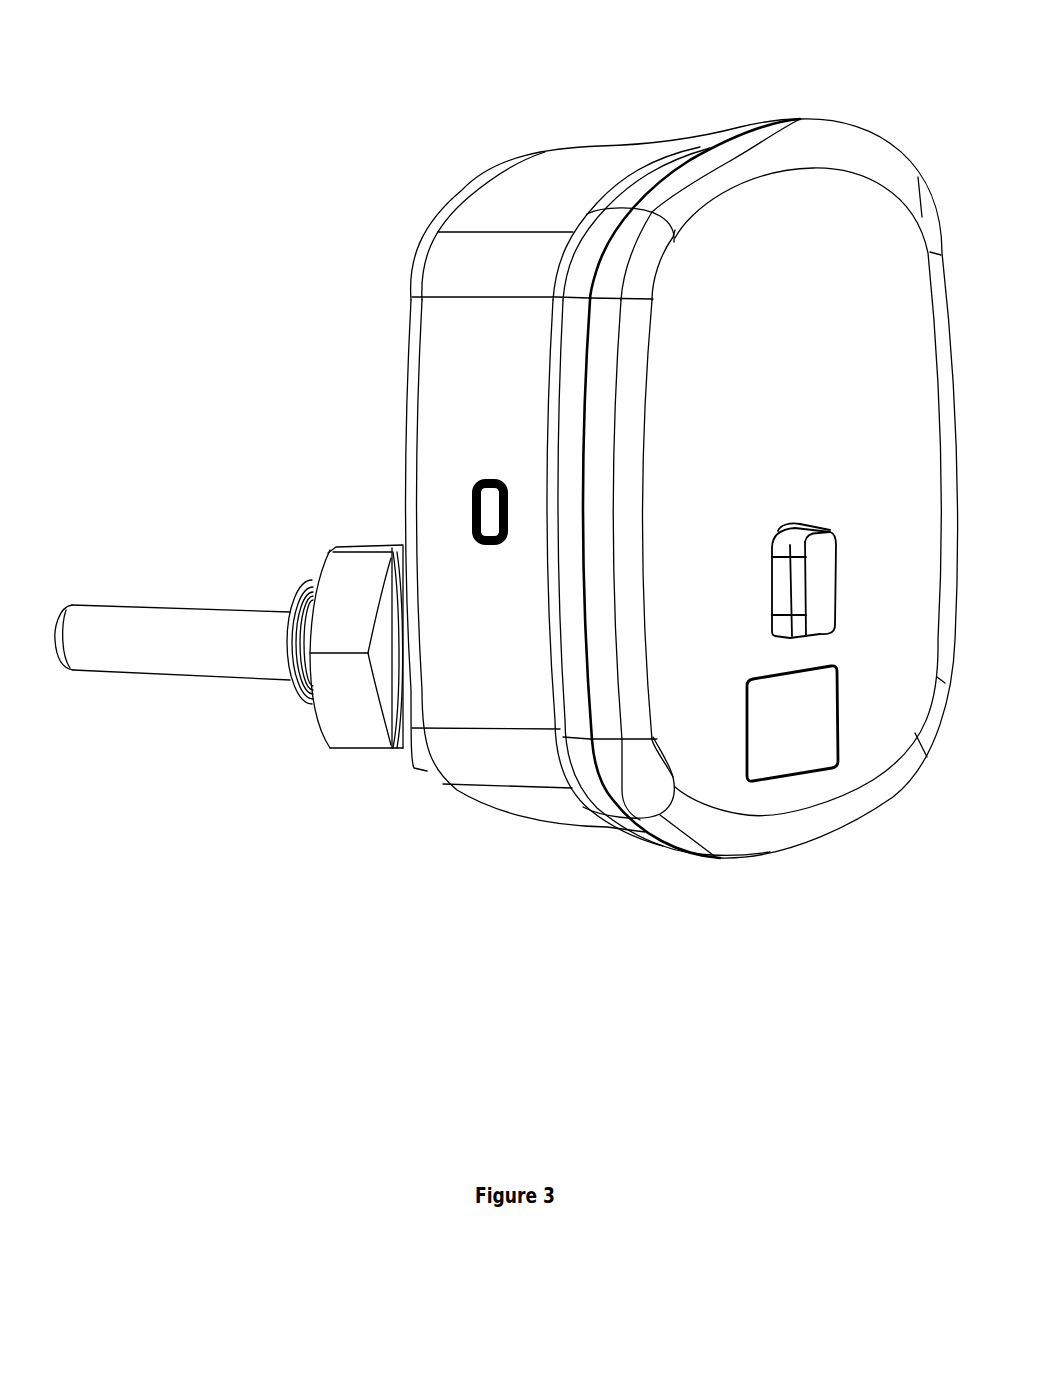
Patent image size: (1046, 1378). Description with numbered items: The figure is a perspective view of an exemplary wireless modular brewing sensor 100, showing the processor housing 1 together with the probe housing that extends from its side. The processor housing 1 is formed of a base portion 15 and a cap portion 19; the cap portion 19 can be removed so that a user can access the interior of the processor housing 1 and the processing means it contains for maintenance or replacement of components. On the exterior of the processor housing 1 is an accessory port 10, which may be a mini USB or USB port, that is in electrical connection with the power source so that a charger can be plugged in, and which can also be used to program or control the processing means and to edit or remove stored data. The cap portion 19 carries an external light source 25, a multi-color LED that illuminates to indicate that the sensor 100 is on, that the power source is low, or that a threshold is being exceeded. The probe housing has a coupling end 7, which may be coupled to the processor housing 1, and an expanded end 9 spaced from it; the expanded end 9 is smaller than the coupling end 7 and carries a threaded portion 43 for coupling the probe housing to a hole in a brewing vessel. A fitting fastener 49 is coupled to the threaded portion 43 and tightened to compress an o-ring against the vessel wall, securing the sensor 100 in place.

The wireless modular brewing sensor 100 is at (387, 100).
The processor housing 1 is at (538, 697).
The coupling end 7 is at (400, 697).
The expanded end 9 is at (110, 600).
The accessory port 10 is at (474, 483).
The base portion 15 is at (608, 150).
The cap portion 19 is at (858, 138).
The light source 25 is at (811, 623).
The threaded portion 43 is at (292, 590).
The fitting fastener 49 is at (352, 550).